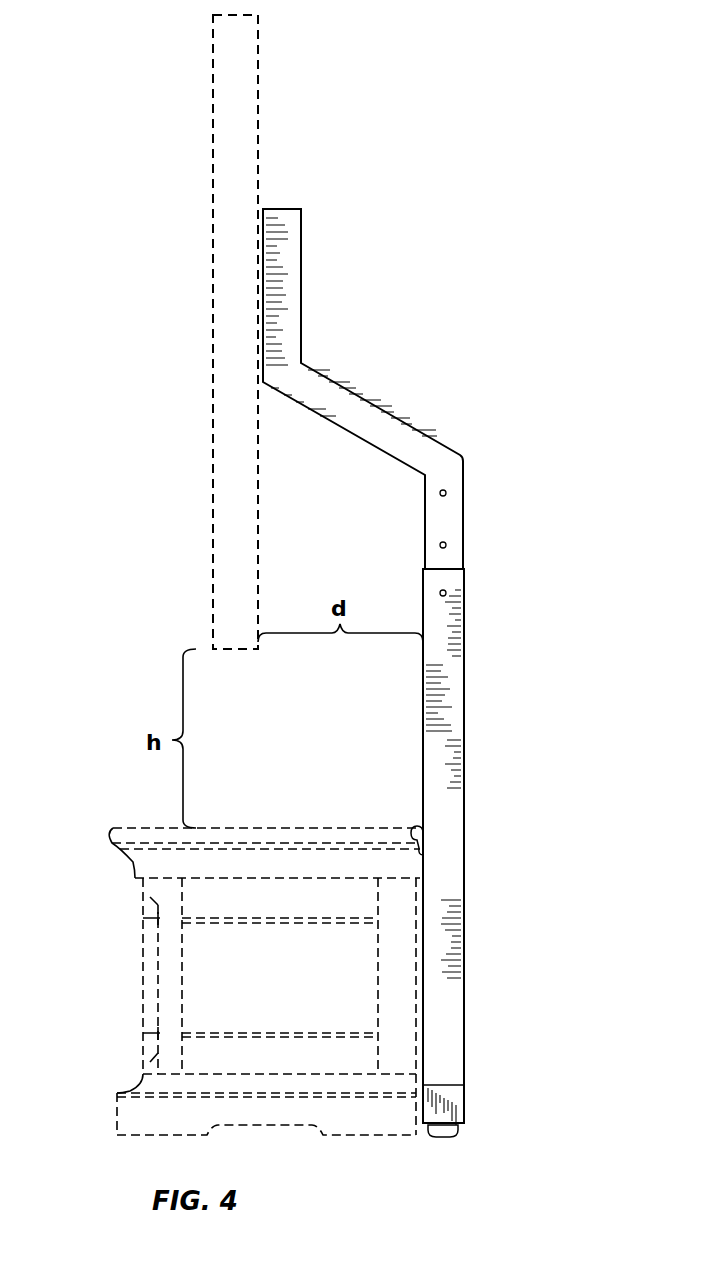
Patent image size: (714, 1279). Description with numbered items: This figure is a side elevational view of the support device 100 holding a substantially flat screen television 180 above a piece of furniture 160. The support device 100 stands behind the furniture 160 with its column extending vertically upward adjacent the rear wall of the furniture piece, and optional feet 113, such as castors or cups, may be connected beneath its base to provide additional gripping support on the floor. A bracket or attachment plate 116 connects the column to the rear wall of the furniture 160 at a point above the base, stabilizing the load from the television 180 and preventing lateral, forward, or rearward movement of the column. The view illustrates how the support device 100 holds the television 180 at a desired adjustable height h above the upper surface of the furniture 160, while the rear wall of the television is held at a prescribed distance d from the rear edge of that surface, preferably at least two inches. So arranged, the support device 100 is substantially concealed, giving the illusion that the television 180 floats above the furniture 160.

The support device 100 is at (440, 383).
The feet 113 is at (447, 1136).
The bracket or attachment plate 116 is at (418, 830).
The piece of furniture 160 is at (138, 820).
The flat screen television 180 is at (180, 72).